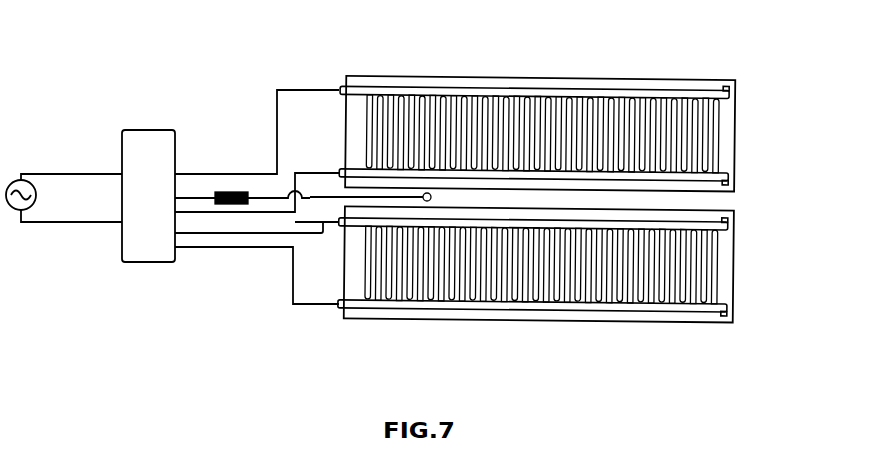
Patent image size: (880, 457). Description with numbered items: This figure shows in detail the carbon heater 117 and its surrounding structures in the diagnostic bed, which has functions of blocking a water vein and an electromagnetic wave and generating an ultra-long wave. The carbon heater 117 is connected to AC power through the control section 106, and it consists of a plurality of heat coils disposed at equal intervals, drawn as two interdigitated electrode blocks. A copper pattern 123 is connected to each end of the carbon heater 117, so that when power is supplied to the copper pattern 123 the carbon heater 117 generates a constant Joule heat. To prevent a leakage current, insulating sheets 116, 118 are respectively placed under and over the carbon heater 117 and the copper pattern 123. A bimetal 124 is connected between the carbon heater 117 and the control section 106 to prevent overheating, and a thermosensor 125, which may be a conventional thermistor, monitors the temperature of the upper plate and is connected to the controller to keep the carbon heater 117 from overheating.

The control section 106 is at (140, 142).
The bimetal 124 is at (230, 193).
The thermosensor 125 is at (425, 192).
The copper pattern 123 is at (724, 91).
The carbon heater 117 is at (719, 109).
The insulating sheet 116 is at (725, 150).
The insulating sheet 118 is at (536, 264).